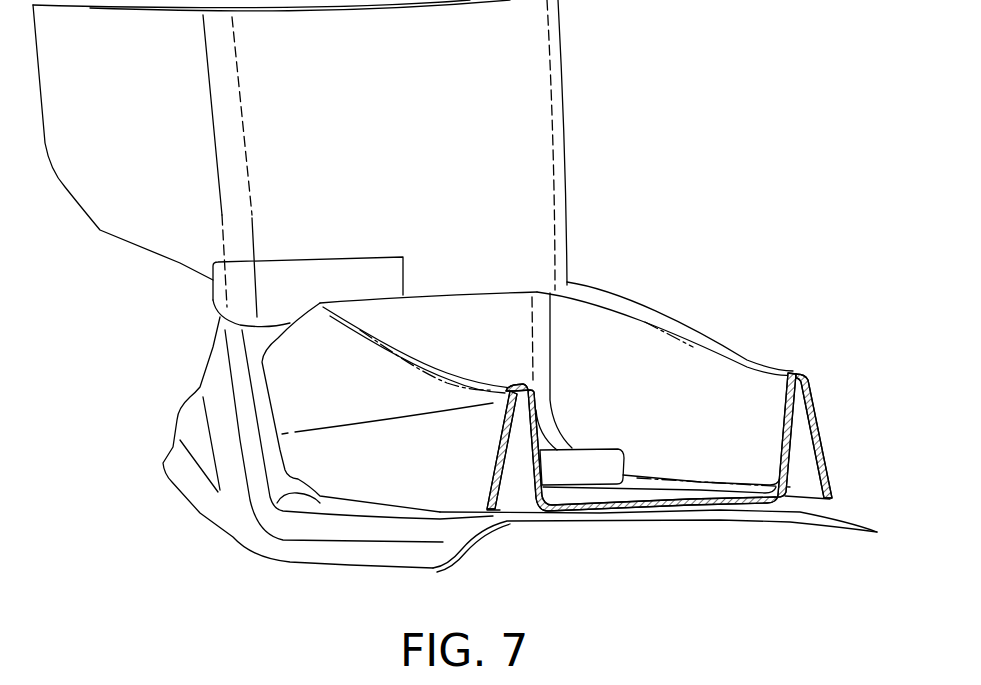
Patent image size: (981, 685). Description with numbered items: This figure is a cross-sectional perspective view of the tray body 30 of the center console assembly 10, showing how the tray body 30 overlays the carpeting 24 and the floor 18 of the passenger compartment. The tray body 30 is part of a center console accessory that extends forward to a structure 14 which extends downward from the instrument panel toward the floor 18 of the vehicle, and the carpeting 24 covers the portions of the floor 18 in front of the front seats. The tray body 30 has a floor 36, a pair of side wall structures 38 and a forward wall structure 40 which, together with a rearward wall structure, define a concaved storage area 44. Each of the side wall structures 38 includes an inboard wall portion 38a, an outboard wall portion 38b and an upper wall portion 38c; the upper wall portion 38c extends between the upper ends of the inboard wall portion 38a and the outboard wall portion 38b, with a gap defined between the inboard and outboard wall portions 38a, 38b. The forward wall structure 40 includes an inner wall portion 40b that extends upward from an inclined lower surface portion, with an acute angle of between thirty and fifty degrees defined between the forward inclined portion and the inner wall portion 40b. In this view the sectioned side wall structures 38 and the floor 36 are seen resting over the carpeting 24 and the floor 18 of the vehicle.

The center console assembly 10 is at (752, 238).
The structure 14 is at (485, 80).
The floor 18 is at (276, 502).
The carpeting 24 is at (352, 550).
The tray body 30 is at (753, 355).
The floor 36 is at (583, 497).
The side wall structures 38 is at (652, 388).
The inboard wall portion 38a is at (723, 413).
The outboard wall portion 38b is at (825, 433).
The upper wall portion 38c is at (493, 381).
The forward wall structure 40 is at (444, 295).
The inner wall portion 40b is at (473, 333).
The concaved storage area 44 is at (622, 363).